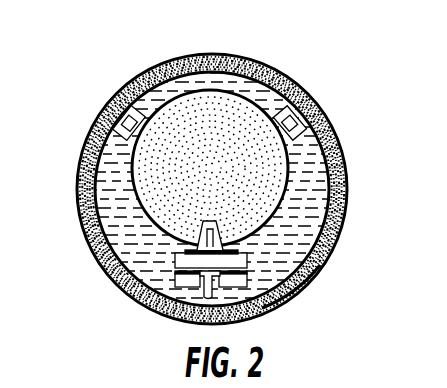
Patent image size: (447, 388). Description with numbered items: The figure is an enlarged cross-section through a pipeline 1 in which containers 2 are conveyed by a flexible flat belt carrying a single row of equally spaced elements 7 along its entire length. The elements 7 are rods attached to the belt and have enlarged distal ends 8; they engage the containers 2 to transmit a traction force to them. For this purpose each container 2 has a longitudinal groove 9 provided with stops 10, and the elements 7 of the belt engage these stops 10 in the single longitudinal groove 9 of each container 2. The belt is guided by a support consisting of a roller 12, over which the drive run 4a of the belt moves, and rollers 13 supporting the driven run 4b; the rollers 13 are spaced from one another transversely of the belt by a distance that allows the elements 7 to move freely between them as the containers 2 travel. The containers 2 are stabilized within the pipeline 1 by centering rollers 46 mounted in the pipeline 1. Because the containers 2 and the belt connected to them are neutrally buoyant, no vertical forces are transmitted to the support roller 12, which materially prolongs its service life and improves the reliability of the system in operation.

The pipeline 1 is at (336, 159).
The container 2 is at (277, 73).
The drive run 4a is at (172, 256).
The driven run 4b is at (293, 289).
The centering rollers 46 is at (296, 120).
The elements 7 is at (225, 243).
The enlarged distal ends 8 is at (218, 222).
The longitudinal groove 9 is at (205, 222).
The stops 10 is at (198, 240).
The roller 12 is at (250, 259).
The rollers 13 is at (237, 282).